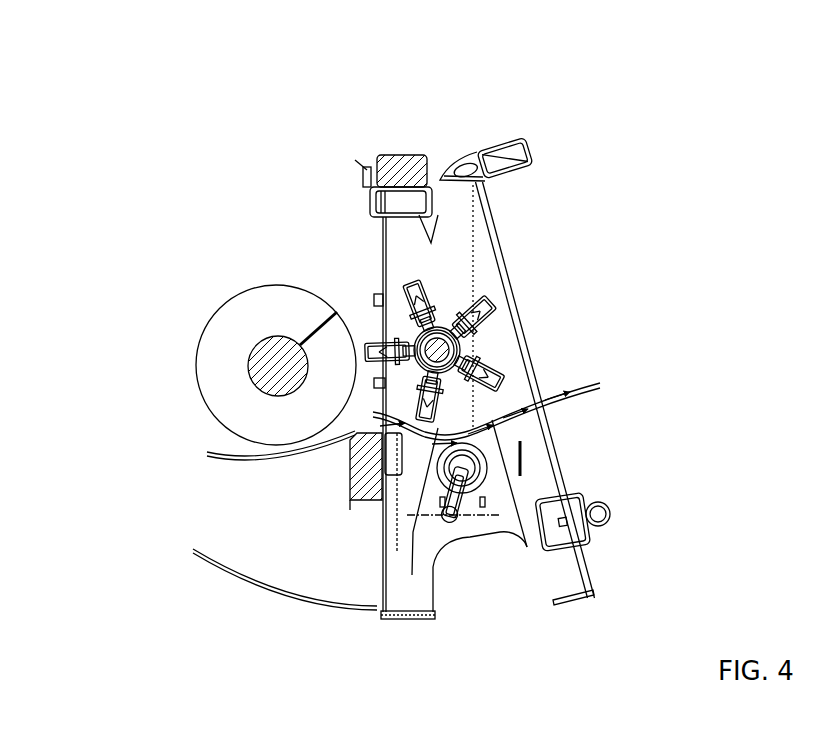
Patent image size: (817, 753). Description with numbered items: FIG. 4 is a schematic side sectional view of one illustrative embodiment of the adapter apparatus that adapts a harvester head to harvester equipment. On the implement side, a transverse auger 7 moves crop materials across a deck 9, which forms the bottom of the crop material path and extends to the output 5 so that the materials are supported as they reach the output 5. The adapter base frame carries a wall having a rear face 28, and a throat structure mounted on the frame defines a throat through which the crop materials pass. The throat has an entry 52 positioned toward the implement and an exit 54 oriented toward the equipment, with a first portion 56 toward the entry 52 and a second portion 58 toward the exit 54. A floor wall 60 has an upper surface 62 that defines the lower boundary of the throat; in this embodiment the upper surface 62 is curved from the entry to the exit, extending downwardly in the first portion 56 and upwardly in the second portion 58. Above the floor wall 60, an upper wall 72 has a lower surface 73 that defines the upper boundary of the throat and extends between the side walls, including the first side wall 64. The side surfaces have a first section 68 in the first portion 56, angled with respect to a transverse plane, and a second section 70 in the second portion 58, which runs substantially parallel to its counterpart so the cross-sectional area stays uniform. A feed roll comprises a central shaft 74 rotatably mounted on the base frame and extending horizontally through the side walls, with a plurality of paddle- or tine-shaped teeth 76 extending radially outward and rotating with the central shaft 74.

The output 5 is at (356, 300).
The transverse auger 7 is at (248, 323).
The deck 9 is at (263, 462).
The rear face 28 is at (415, 271).
The entry 52 is at (383, 283).
The exit 54 is at (508, 390).
The first portion 56 is at (383, 240).
The second portion 58 is at (537, 380).
The floor wall 60 is at (442, 418).
The upper surface 62 is at (413, 575).
The first side wall 64 is at (527, 140).
The first section 68 is at (407, 246).
The second section 70 is at (490, 283).
The upper wall 72 is at (397, 215).
The lower surface 73 is at (438, 240).
The central shaft 74 is at (498, 338).
The teeth 76 is at (506, 368).